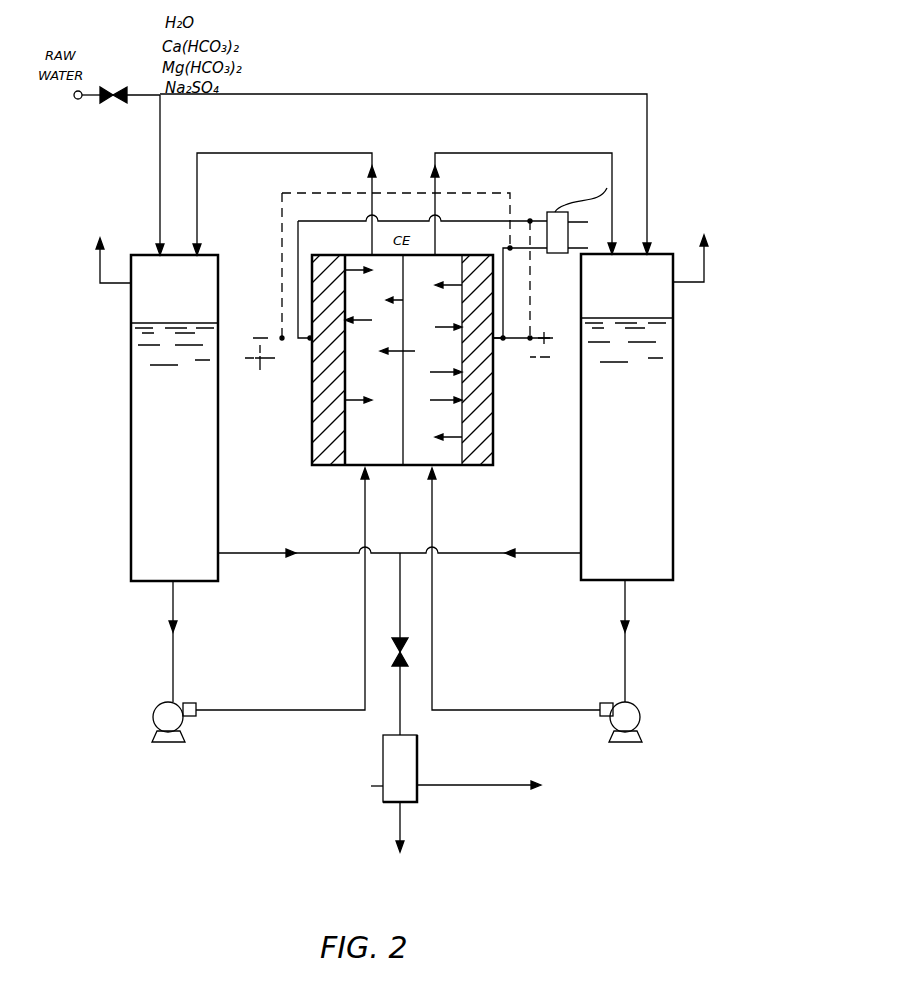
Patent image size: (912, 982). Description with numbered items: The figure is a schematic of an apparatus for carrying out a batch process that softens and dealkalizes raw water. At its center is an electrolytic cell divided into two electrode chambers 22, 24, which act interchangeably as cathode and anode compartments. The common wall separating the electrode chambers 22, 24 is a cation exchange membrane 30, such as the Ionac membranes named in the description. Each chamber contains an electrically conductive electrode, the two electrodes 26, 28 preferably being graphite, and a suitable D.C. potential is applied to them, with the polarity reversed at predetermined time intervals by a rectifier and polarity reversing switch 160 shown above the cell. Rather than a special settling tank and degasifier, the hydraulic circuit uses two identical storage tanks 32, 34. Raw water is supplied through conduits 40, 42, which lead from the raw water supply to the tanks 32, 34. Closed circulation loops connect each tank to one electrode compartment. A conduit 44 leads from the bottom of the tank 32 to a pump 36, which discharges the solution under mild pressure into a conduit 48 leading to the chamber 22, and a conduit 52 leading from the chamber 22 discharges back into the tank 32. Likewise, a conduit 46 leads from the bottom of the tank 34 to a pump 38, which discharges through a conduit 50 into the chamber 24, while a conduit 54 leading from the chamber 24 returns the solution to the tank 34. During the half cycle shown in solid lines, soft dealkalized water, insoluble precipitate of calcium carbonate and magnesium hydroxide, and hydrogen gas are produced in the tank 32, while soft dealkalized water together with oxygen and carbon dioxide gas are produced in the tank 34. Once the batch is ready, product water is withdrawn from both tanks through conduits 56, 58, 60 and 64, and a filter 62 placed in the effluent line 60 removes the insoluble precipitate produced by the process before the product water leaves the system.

The electrode chamber 22 is at (350, 462).
The electrode chamber 24 is at (447, 460).
The electrode 26 is at (318, 438).
The electrode 28 is at (495, 437).
The cation exchange membrane 30 is at (403, 435).
The storage tank 32 is at (133, 452).
The storage tank 34 is at (674, 494).
The pump 36 is at (160, 722).
The pump 38 is at (641, 722).
The conduit 40 is at (158, 150).
The conduit 42 is at (650, 138).
The conduit 44 is at (170, 665).
The conduit 46 is at (628, 617).
The conduit 48 is at (256, 710).
The conduit 50 is at (516, 706).
The conduit 52 is at (270, 153).
The conduit 54 is at (500, 153).
The conduit 56 is at (270, 547).
The conduit 58 is at (465, 553).
The effluent line 60 is at (398, 712).
The filter 62 is at (418, 750).
The conduit 64 is at (398, 820).
The switch 160 is at (489, 248).